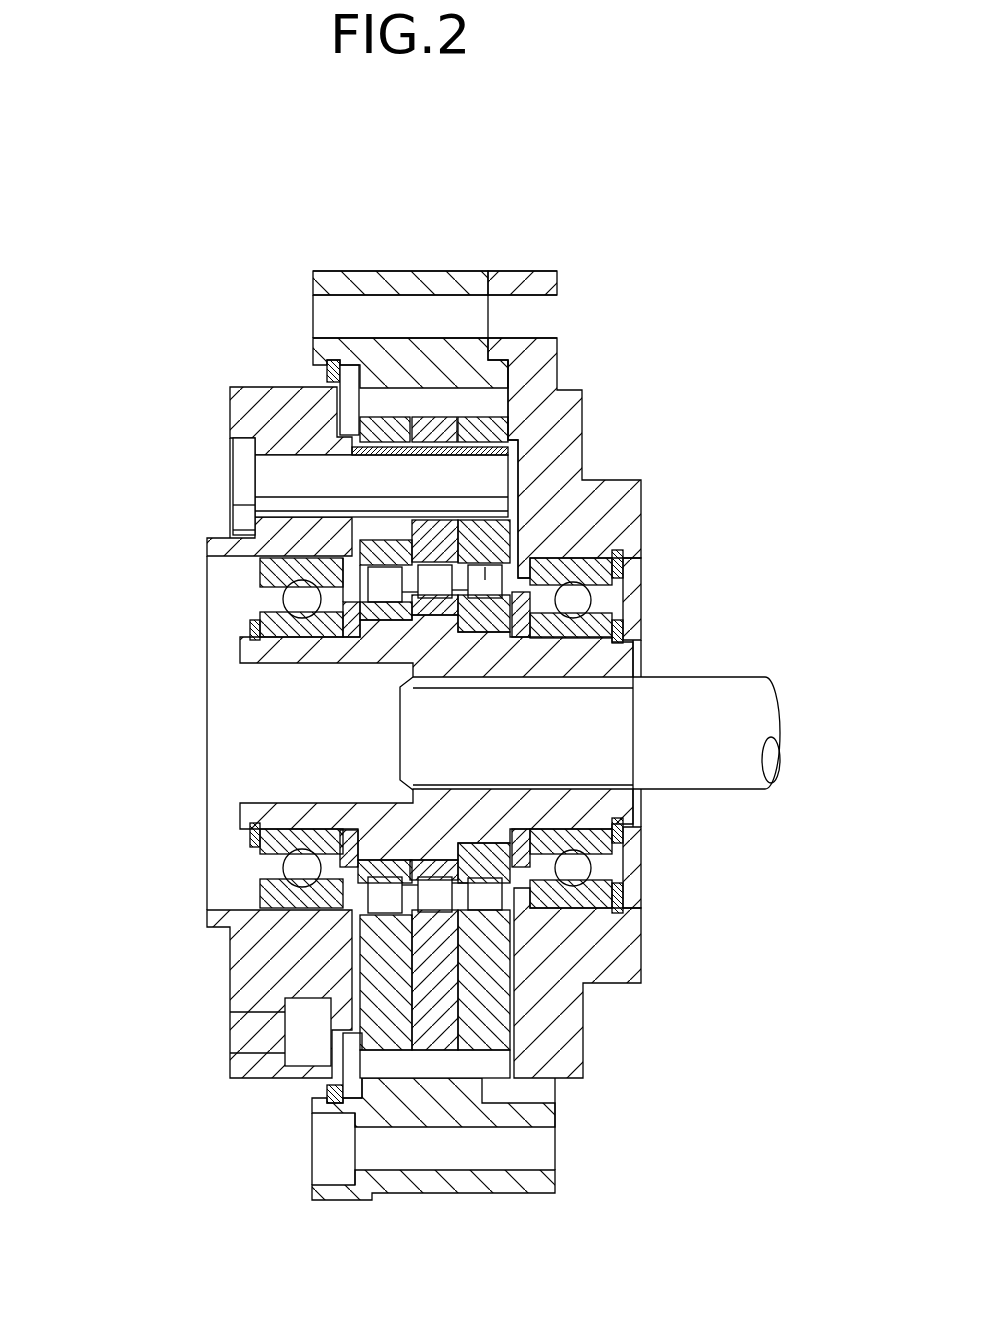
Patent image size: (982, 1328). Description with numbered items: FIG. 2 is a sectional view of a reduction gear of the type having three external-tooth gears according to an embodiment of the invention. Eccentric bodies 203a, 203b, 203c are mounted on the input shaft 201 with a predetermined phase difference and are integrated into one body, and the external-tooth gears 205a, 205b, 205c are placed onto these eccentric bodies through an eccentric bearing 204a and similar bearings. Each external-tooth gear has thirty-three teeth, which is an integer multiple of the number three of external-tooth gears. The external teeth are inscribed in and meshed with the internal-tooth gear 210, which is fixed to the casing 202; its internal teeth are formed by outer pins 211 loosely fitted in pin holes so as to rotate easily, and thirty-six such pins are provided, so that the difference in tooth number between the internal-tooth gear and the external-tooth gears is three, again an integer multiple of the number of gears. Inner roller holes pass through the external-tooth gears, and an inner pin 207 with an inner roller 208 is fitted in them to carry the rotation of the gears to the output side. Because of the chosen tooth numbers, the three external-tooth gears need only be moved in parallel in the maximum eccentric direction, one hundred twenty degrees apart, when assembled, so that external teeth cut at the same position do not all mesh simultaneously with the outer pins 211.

The input shaft 201 is at (692, 693).
The casing 202 is at (272, 945).
The eccentric body 203a is at (485, 662).
The eccentric body 203b is at (330, 1030).
The eccentric body 203c is at (245, 1003).
The eccentric bearing 204a is at (517, 480).
The external-tooth gear 205a is at (482, 1017).
The external-tooth gear 205b is at (433, 1027).
The external-tooth gear 205c is at (388, 1033).
The inner pin 207 is at (368, 485).
The inner roller 208 is at (442, 420).
The internal-tooth gear 210 is at (457, 365).
The outer pin 211 is at (513, 373).